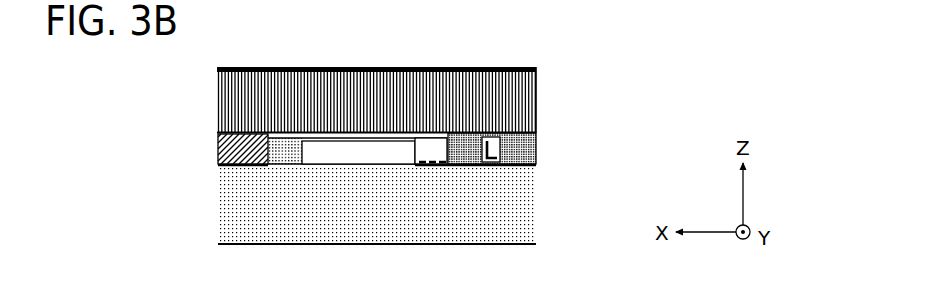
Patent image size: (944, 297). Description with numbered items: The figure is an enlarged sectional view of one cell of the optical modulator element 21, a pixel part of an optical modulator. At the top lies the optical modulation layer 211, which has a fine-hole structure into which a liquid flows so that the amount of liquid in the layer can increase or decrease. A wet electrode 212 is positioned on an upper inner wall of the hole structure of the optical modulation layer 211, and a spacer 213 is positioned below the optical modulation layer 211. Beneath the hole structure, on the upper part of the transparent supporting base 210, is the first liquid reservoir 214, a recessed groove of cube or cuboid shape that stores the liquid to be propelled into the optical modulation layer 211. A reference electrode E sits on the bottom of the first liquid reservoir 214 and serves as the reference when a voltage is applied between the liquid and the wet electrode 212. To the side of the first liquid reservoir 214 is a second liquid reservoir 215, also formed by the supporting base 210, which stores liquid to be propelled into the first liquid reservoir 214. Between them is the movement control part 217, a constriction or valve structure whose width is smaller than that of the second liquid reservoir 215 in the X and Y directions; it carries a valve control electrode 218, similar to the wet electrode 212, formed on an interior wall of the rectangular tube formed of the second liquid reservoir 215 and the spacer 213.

The optical modulator element 21 is at (413, 144).
The transparent supporting base 210 is at (527, 215).
The optical modulation layer 211 is at (545, 102).
The wet electrode 212 is at (340, 67).
The spacer 213 is at (288, 137).
The first liquid reservoir 214 is at (545, 148).
The second liquid reservoir 215 is at (332, 157).
The movement control part 217 is at (405, 152).
The valve control electrode 218 is at (432, 162).
The reference electrode E is at (522, 166).